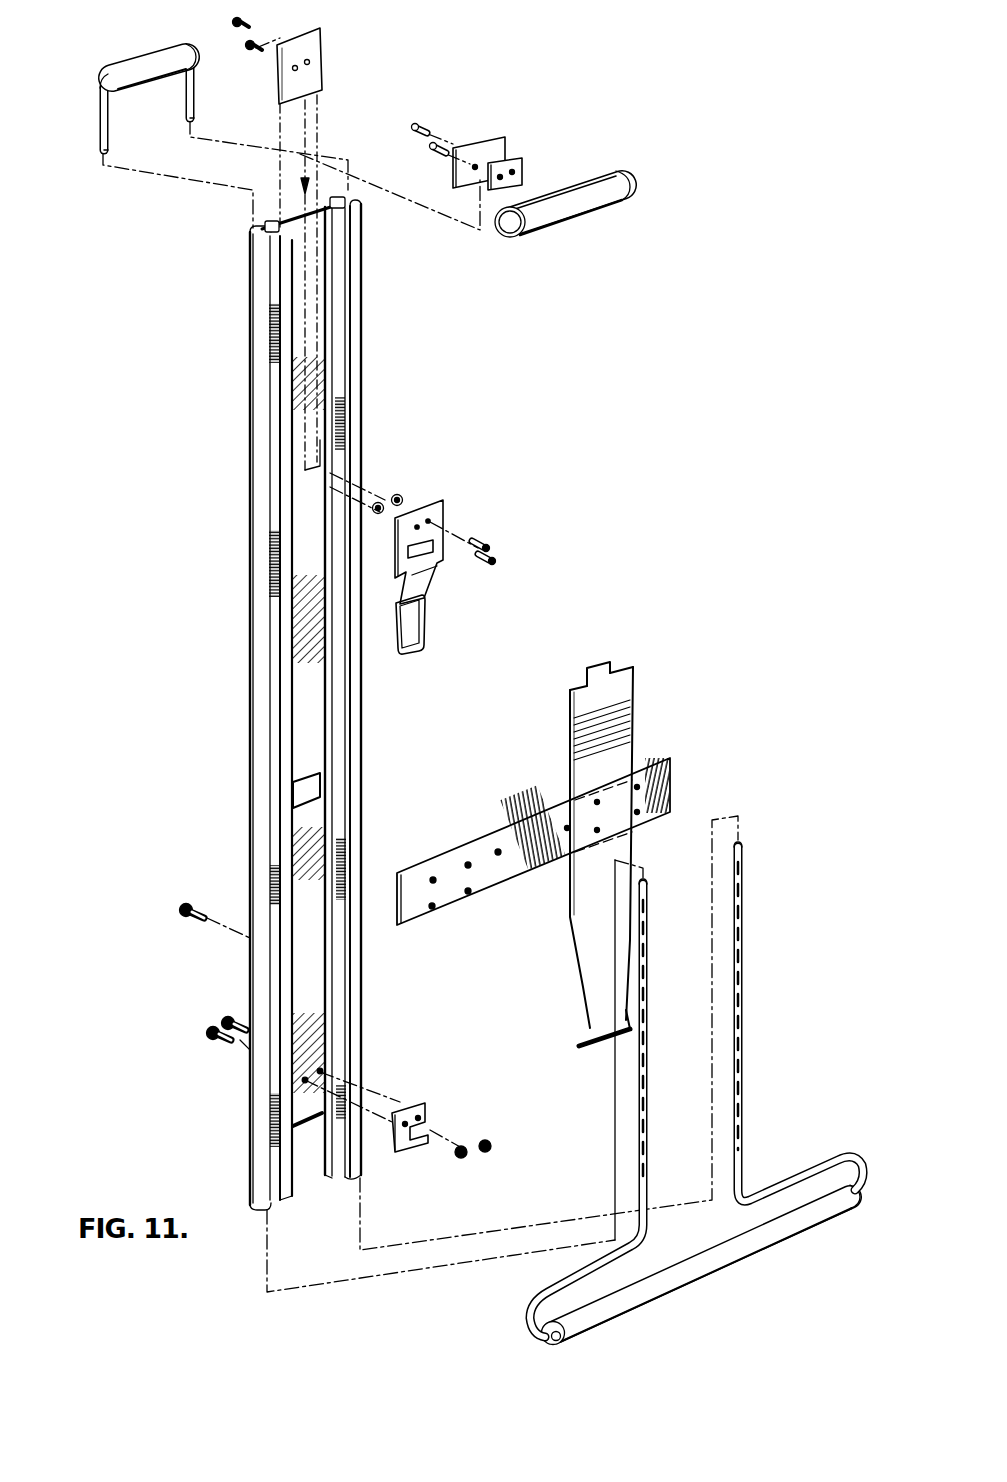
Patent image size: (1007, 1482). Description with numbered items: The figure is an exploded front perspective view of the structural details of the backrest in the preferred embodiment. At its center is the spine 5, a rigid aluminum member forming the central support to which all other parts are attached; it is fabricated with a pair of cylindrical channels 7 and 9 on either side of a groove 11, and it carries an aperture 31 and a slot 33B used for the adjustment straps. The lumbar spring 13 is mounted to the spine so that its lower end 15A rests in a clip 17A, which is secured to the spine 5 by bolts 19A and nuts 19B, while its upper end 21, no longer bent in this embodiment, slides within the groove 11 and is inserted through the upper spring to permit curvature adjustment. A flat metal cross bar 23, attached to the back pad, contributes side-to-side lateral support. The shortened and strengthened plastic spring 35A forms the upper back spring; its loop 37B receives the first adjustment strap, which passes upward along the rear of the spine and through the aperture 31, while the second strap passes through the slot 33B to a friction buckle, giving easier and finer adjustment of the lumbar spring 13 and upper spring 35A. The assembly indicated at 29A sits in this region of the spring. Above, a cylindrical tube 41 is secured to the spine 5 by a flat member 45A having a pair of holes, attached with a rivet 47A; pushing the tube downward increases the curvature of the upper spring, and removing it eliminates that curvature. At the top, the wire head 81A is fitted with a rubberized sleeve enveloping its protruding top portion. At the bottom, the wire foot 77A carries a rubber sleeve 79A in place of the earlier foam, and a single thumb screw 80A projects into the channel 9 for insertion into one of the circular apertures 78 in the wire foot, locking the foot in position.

The spine 5 is at (250, 622).
The cylindrical channel 7 is at (362, 206).
The cylindrical channel 9 is at (248, 232).
The groove 11 is at (302, 676).
The lumbar spring 13 is at (617, 854).
The end of lumbar spring 15A is at (592, 1052).
The clip 17A is at (422, 1108).
The bolts 19A is at (188, 1027).
The nuts 19B is at (488, 1153).
The upper end of lumbar spring 21 is at (610, 660).
The cross bar 23 is at (412, 924).
The latch assembly 29A is at (447, 577).
The aperture 31 is at (320, 786).
The slot 33B is at (307, 1130).
The spring 35A is at (440, 505).
The loop 37B is at (415, 650).
The cylindrical tube 41 is at (594, 217).
The flat member 45A is at (516, 143).
The rivet 47A is at (428, 126).
The wire foot 77A is at (696, 1093).
The circular apertures 78 is at (733, 875).
The rubber sleeve 79A is at (746, 1262).
The thumb screw 80A is at (181, 912).
The wire head 81A is at (140, 58).